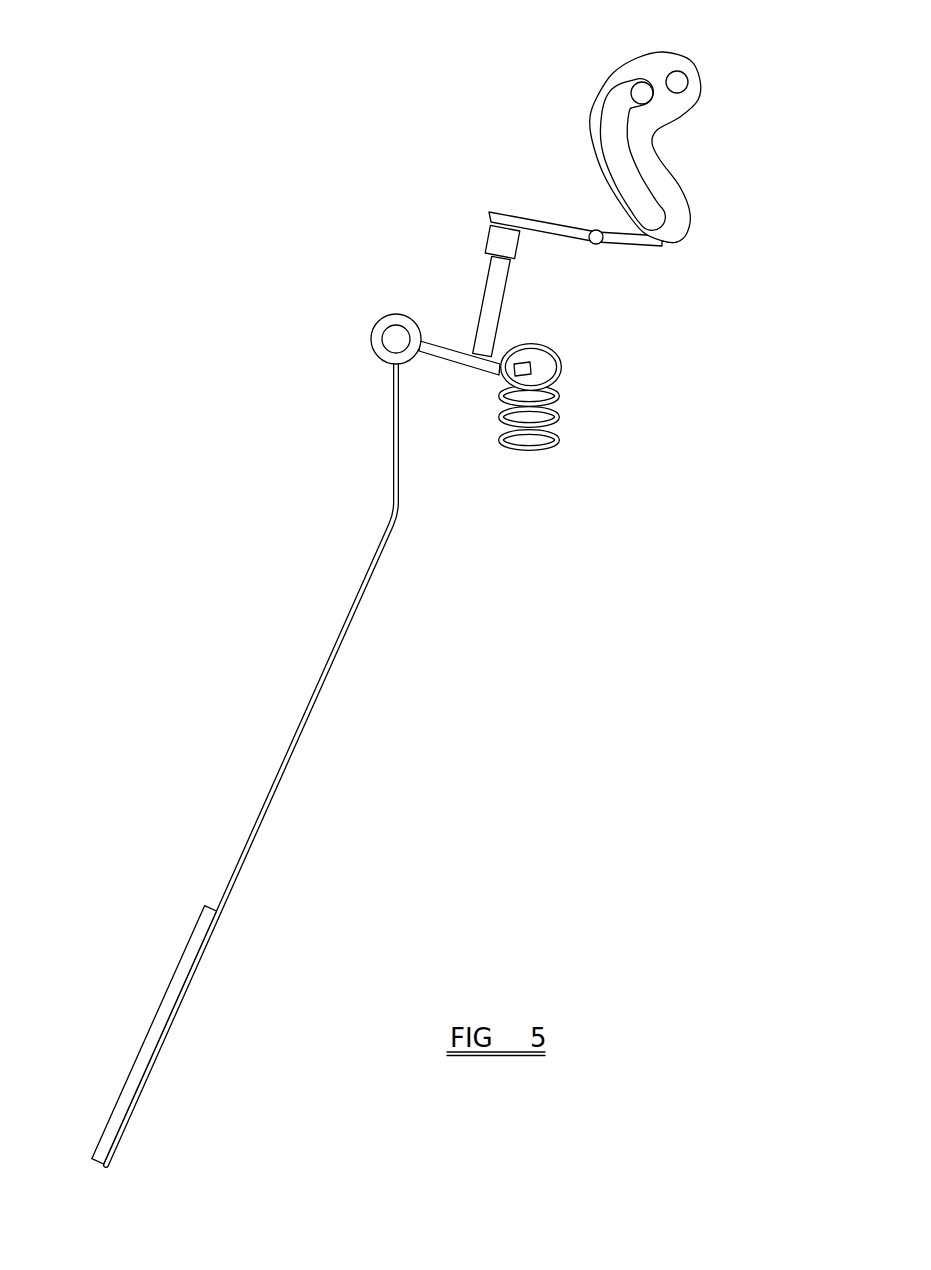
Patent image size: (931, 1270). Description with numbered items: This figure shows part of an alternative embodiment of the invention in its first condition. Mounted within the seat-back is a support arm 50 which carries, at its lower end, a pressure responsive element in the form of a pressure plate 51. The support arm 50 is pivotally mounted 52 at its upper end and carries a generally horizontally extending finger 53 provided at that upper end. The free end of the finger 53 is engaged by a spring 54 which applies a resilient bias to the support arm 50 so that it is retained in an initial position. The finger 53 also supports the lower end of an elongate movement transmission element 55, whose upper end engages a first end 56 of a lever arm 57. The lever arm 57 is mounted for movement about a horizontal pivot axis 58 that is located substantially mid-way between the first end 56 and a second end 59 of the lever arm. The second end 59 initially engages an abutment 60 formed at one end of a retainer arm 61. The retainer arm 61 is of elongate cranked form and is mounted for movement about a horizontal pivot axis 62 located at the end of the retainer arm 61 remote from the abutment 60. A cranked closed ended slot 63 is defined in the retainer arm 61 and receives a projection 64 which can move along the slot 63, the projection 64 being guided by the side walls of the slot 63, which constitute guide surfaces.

The support arm 50 is at (303, 670).
The pressure plate 51 is at (130, 1023).
The pivotal mounting 52 is at (385, 340).
The finger 53 is at (448, 358).
The spring 54 is at (560, 433).
The elongate movement transmission element 55 is at (490, 298).
The first end of lever arm 56 is at (510, 213).
The lever arm 57 is at (573, 252).
The horizontal pivot axis 58 is at (595, 231).
The second end of lever arm 59 is at (637, 250).
The abutment 60 is at (683, 242).
The retainer arm 61 is at (672, 197).
The horizontal pivot axis 62 is at (677, 82).
The cranked closed ended slot 63 is at (603, 110).
The projection 64 is at (640, 90).